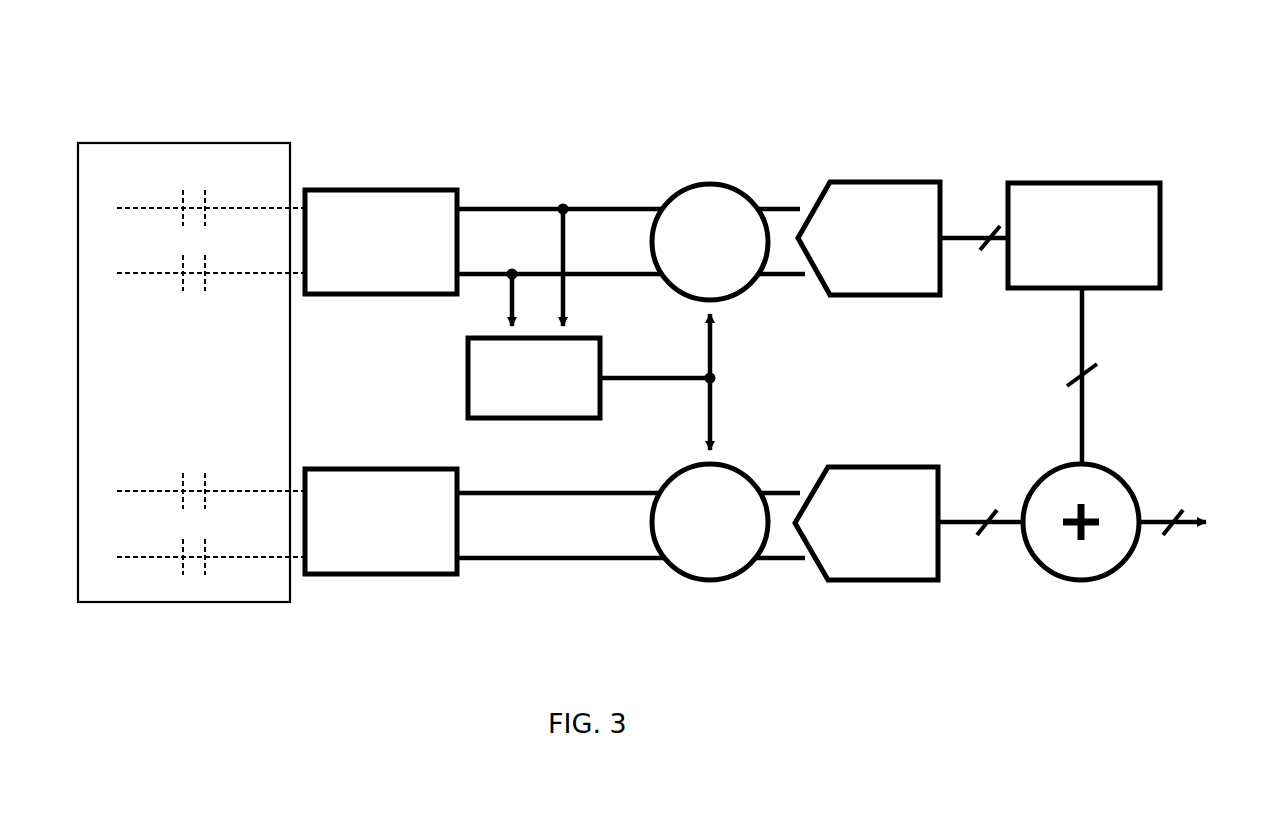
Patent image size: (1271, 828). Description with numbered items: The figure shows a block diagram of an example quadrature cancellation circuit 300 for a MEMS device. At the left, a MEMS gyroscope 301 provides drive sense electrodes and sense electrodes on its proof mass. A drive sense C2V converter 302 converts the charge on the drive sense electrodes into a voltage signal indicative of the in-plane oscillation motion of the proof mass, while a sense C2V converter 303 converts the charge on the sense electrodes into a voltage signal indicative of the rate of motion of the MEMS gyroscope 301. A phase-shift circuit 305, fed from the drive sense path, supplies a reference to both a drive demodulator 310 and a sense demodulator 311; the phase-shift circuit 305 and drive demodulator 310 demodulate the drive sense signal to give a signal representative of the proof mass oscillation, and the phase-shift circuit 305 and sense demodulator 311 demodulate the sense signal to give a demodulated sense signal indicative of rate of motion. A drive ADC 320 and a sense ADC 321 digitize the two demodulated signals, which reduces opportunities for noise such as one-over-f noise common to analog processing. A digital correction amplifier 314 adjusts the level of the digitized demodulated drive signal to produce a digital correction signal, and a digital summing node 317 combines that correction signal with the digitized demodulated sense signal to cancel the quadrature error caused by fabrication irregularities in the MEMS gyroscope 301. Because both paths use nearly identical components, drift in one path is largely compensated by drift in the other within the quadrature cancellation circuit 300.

The quadrature cancellation circuit 300 is at (700, 64).
The MEMS gyroscope 301 is at (202, 143).
The drive sense C2V converter 302 is at (412, 190).
The sense C2V converter 303 is at (380, 574).
The phase-shift circuit 305 is at (600, 358).
The drive demodulator 310 is at (688, 185).
The sense demodulator 311 is at (690, 582).
The digital correction amplifier 314 is at (1160, 210).
The digital summing node 317 is at (1115, 468).
The drive ADC 320 is at (880, 182).
The sense ADC 321 is at (870, 582).